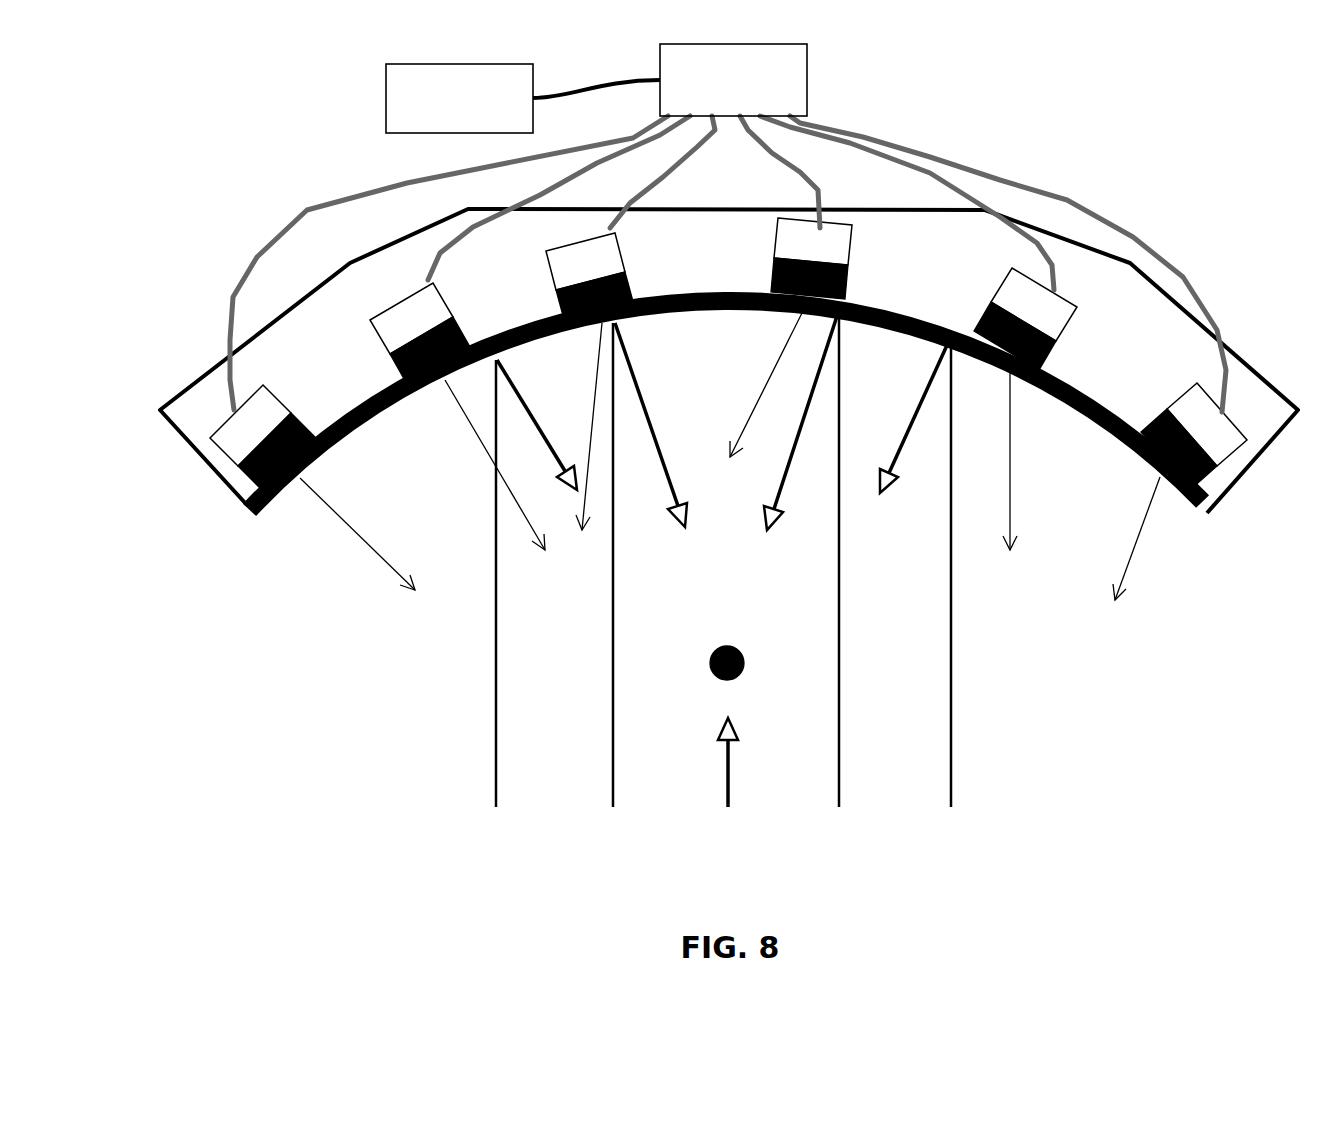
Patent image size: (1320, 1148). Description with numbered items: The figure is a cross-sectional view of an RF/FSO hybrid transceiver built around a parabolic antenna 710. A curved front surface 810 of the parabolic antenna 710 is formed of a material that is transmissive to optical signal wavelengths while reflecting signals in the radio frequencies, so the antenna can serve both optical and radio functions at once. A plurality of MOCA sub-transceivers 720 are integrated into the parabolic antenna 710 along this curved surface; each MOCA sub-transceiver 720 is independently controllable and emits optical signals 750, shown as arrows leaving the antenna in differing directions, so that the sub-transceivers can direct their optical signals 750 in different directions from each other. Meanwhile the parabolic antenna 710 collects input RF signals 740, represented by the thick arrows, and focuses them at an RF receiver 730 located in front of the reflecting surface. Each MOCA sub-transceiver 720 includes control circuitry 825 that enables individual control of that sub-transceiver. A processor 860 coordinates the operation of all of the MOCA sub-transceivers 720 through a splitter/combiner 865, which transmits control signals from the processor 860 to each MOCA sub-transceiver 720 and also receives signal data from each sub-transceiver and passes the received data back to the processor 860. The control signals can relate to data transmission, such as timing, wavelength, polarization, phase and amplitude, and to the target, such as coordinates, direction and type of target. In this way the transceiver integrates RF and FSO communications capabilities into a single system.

The parabolic antenna 710 is at (193, 450).
The MOCA sub-transceiver 720 is at (307, 420).
The RF receiver 730 is at (710, 675).
The input RF signals 740 is at (977, 795).
The optical signals 750 is at (372, 548).
The front surface 810 is at (270, 515).
The control circuitry 825 is at (263, 385).
The processor 860 is at (386, 98).
The splitter/combiner 865 is at (807, 82).